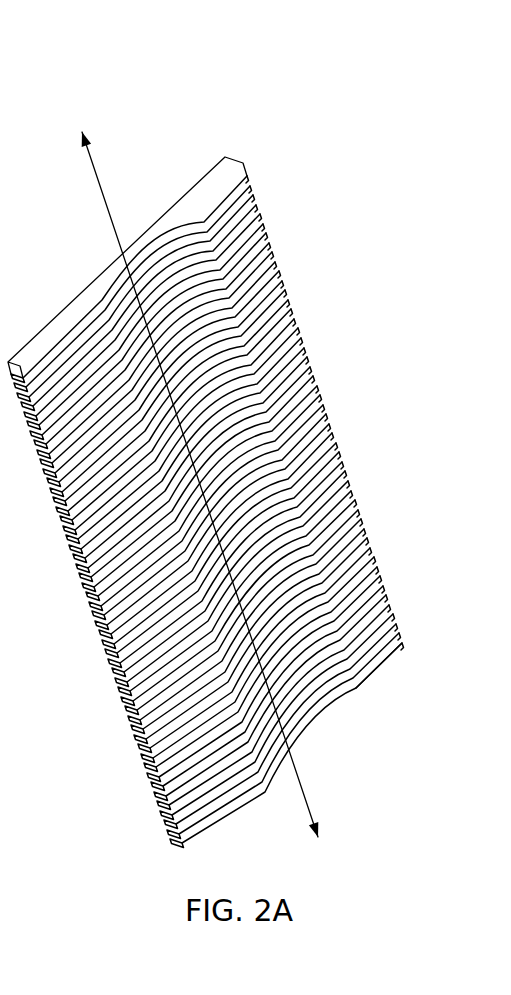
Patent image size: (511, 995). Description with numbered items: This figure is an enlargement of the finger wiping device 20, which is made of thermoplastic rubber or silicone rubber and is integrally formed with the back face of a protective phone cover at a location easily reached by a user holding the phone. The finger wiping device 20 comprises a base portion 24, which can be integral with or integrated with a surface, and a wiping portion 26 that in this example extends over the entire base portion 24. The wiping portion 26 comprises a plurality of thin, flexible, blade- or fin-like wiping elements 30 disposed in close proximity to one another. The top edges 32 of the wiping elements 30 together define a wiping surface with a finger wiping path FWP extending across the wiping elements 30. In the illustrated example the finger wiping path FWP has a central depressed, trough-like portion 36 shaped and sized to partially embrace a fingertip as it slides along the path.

The finger wiping device 20 is at (350, 378).
The base portion 24 is at (193, 200).
The wiping portion 26 is at (272, 205).
The wiping elements 30 is at (350, 477).
The top edges 32 is at (373, 683).
The trough-like portion 36 is at (325, 718).
The finger wiping path FWP is at (103, 187).